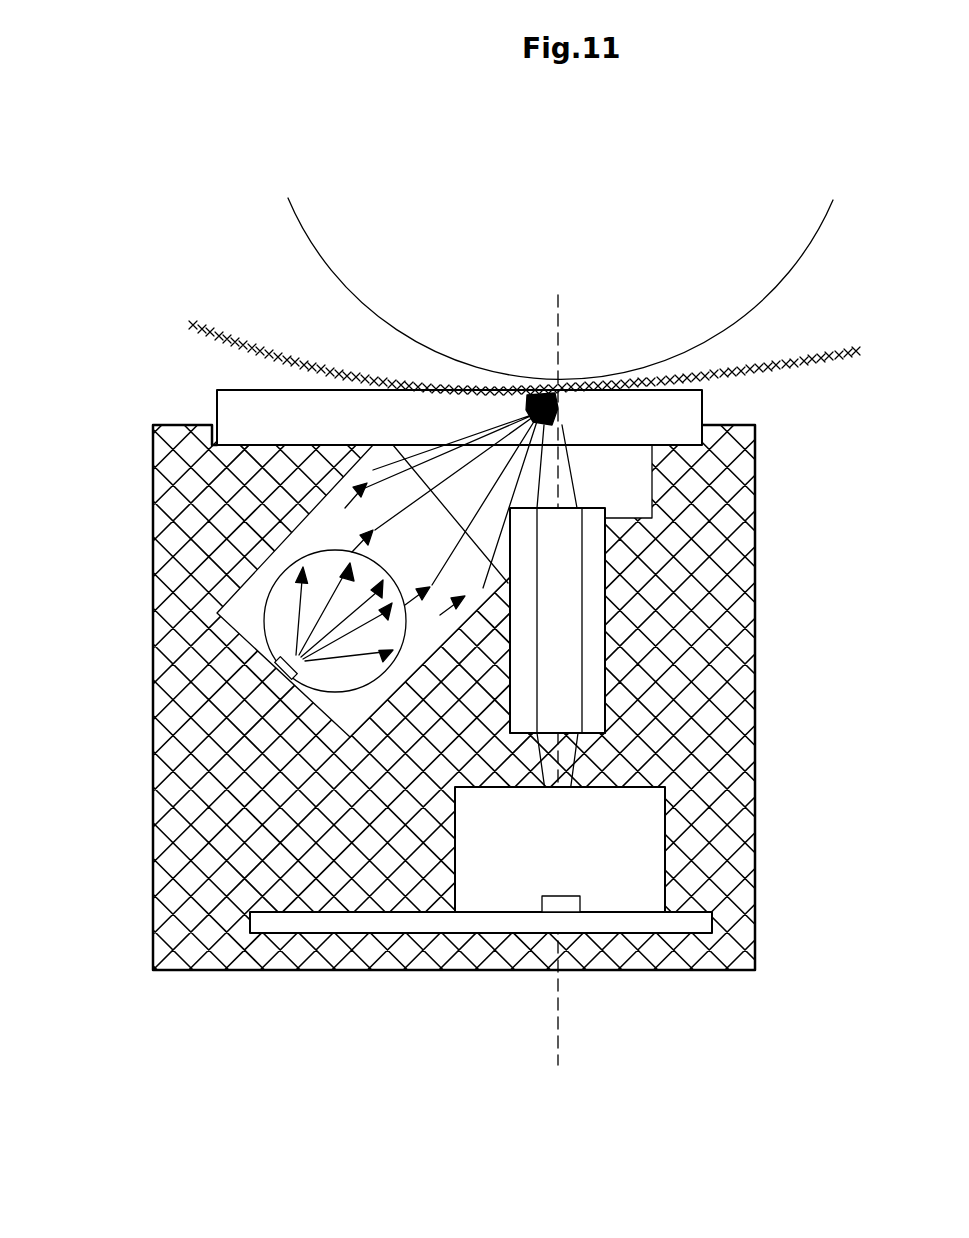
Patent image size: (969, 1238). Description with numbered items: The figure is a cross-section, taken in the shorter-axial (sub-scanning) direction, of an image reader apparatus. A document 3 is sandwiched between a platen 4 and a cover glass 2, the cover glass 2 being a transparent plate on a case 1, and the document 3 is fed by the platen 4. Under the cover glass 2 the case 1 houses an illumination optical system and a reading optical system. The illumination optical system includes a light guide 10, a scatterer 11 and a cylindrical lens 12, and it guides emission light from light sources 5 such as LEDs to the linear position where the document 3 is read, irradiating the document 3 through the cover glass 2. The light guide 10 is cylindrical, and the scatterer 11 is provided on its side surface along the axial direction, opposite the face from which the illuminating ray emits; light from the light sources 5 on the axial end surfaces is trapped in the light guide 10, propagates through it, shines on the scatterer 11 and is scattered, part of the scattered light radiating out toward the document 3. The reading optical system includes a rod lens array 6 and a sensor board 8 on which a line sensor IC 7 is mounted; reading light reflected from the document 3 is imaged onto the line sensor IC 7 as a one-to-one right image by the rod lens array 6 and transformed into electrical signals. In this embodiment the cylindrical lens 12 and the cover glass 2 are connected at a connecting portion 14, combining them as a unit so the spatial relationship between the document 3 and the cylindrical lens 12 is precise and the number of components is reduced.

The case 1 is at (300, 968).
The cover glass 2 is at (245, 390).
The document 3 is at (820, 348).
The platen 4 is at (313, 255).
The light sources 5 is at (303, 627).
The rod lens array 6 is at (607, 678).
The line sensor IC 7 is at (542, 898).
The sensor board 8 is at (652, 935).
The light guide 10 is at (285, 577).
The scatterer 11 is at (300, 680).
The cylindrical lens 12 is at (373, 473).
The connecting portion 14 is at (350, 389).